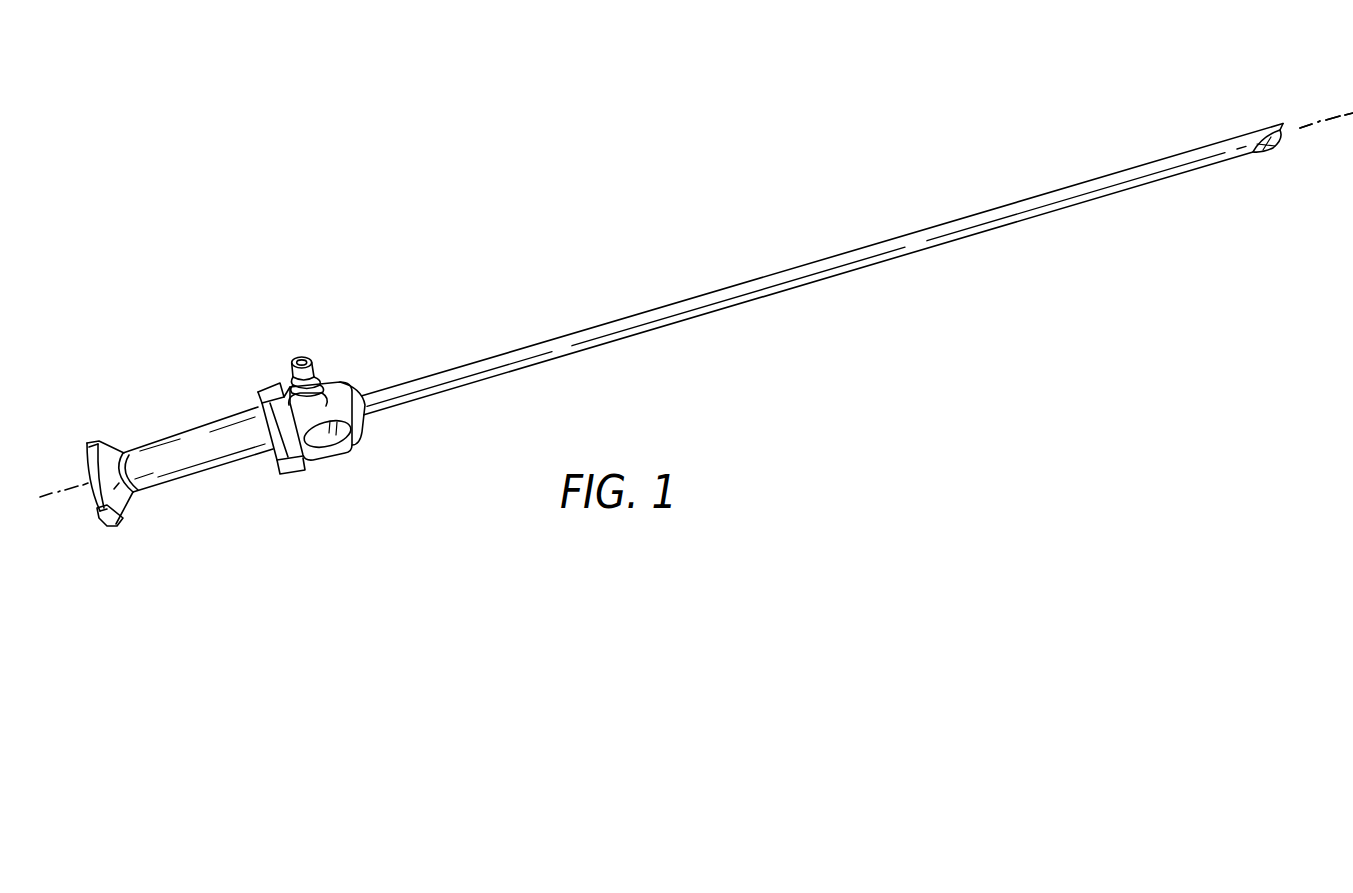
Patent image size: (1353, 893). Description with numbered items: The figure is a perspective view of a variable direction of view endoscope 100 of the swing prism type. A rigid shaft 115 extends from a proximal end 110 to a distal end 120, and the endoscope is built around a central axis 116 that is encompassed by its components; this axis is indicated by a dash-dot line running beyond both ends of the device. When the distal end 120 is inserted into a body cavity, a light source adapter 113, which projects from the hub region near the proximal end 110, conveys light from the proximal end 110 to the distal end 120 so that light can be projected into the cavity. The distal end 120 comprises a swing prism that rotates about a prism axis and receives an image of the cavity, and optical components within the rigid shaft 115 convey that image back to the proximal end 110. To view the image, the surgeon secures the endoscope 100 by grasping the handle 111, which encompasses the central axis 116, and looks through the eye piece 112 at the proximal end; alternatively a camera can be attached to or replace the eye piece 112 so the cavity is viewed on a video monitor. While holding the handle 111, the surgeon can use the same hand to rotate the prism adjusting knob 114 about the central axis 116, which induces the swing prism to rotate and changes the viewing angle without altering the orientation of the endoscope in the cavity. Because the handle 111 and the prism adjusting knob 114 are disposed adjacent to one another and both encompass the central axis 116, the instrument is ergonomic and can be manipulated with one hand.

The variable direction of view endoscope 100 is at (617, 252).
The proximal end 110 is at (301, 330).
The handle 111 is at (218, 476).
The eye piece 112 is at (120, 525).
The light source adapter 113 is at (312, 360).
The prism adjusting knob 114 is at (303, 470).
The rigid shaft 115 is at (652, 331).
The central axis 116 is at (1317, 112).
The distal end 120 is at (1260, 108).